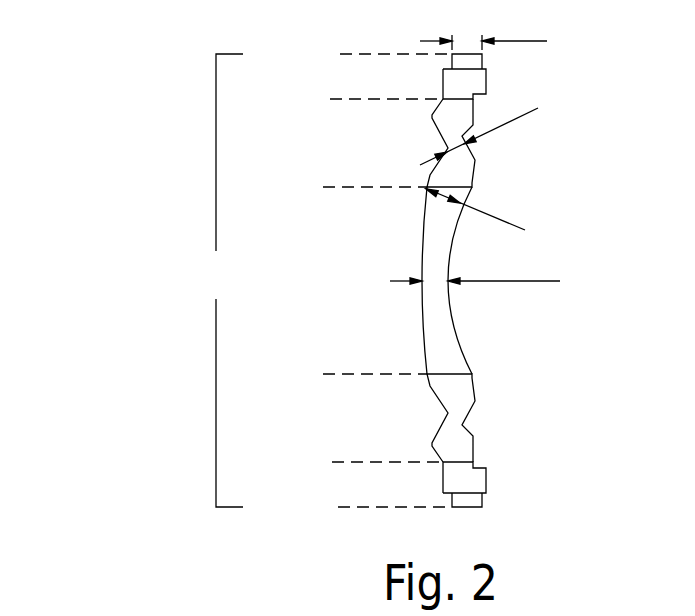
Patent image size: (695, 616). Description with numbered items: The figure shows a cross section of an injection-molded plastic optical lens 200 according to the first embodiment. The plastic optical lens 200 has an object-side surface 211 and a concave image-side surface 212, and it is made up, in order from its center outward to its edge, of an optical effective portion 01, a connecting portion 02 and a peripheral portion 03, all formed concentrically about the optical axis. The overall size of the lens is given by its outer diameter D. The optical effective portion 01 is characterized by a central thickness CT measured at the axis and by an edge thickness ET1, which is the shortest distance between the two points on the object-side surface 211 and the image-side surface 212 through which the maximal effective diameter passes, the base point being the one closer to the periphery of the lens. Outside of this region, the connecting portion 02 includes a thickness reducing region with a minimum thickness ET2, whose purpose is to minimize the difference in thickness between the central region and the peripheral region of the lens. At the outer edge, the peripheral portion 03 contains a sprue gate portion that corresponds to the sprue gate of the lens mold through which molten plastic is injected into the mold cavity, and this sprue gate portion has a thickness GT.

The plastic optical lens 200 is at (332, 265).
The object-side surface 211 is at (422, 315).
The image-side surface 212 is at (451, 318).
The optical effective portion 01 is at (434, 280).
The connecting portion 02 is at (407, 280).
The peripheral portion 03 is at (413, 280).
The outer diameter D is at (226, 280).
The central thickness CT is at (475, 268).
The thickness of sprue gate portion GT is at (483, 30).
The edge thickness ET1 is at (475, 207).
The minimum thickness ET2 is at (479, 125).